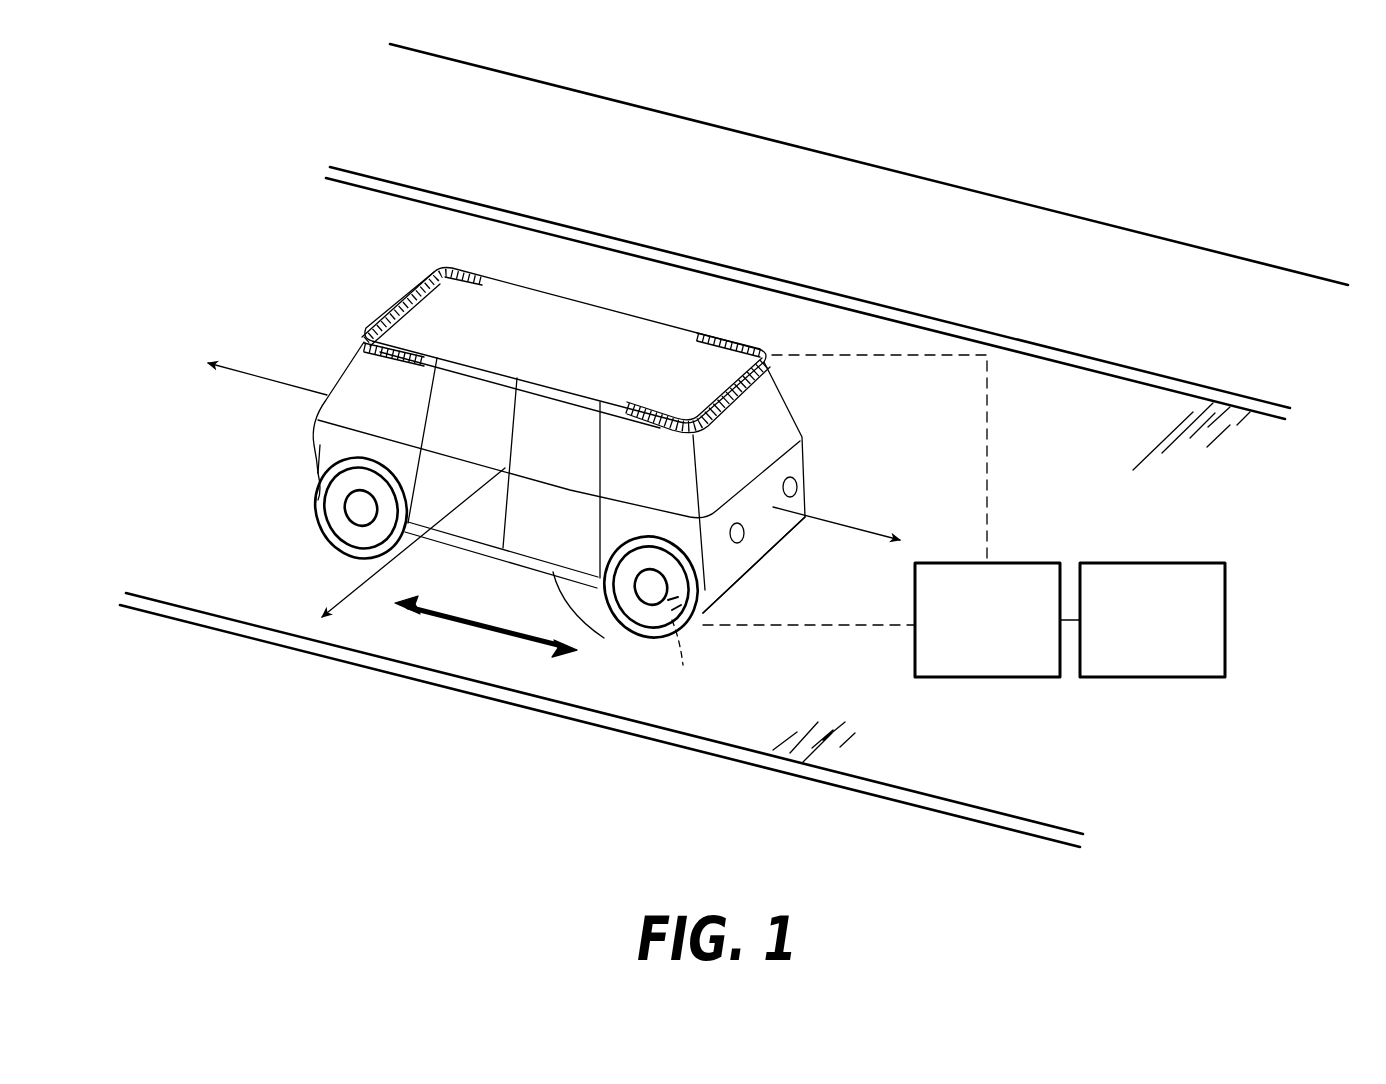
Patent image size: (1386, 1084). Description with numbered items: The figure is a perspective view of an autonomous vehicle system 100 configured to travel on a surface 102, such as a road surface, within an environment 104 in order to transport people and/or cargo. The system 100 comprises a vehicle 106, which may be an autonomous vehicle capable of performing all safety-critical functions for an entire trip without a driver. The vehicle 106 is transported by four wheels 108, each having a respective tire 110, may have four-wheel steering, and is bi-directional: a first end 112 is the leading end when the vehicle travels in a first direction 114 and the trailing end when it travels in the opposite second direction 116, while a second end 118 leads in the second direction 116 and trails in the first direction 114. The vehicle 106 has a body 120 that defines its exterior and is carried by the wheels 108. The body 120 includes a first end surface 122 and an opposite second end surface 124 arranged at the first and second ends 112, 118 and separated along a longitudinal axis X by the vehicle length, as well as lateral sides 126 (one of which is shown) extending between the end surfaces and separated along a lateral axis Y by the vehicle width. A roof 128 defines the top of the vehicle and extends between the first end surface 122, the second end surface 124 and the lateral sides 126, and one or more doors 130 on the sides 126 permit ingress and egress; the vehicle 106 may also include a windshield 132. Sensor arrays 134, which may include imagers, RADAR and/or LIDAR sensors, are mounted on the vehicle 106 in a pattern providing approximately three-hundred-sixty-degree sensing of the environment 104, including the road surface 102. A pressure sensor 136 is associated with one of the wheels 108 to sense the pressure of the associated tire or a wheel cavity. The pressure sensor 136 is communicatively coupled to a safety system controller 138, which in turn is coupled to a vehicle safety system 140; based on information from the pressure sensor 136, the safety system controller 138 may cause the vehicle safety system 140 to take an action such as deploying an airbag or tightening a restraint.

The autonomous vehicle system 100 is at (245, 222).
The surface 102 is at (1002, 739).
The environment 104 is at (1054, 462).
The vehicle 106 is at (597, 278).
The wheels 108 is at (360, 533).
The tire 110 is at (321, 500).
The first end 112 is at (850, 490).
The first direction 114 is at (493, 636).
The second direction 116 is at (400, 550).
The second end 118 is at (277, 287).
The body 120 is at (764, 578).
The first end surface 122 is at (741, 569).
The second end surface 124 is at (313, 417).
The lateral sides 126 is at (632, 530).
The roof 128 is at (594, 344).
The doors 130 is at (476, 432).
The windshield 132 is at (752, 454).
The sensor arrays 134 is at (470, 258).
The pressure sensor 136 is at (826, 524).
The safety system controller 138 is at (1001, 669).
The vehicle safety system 140 is at (1166, 669).